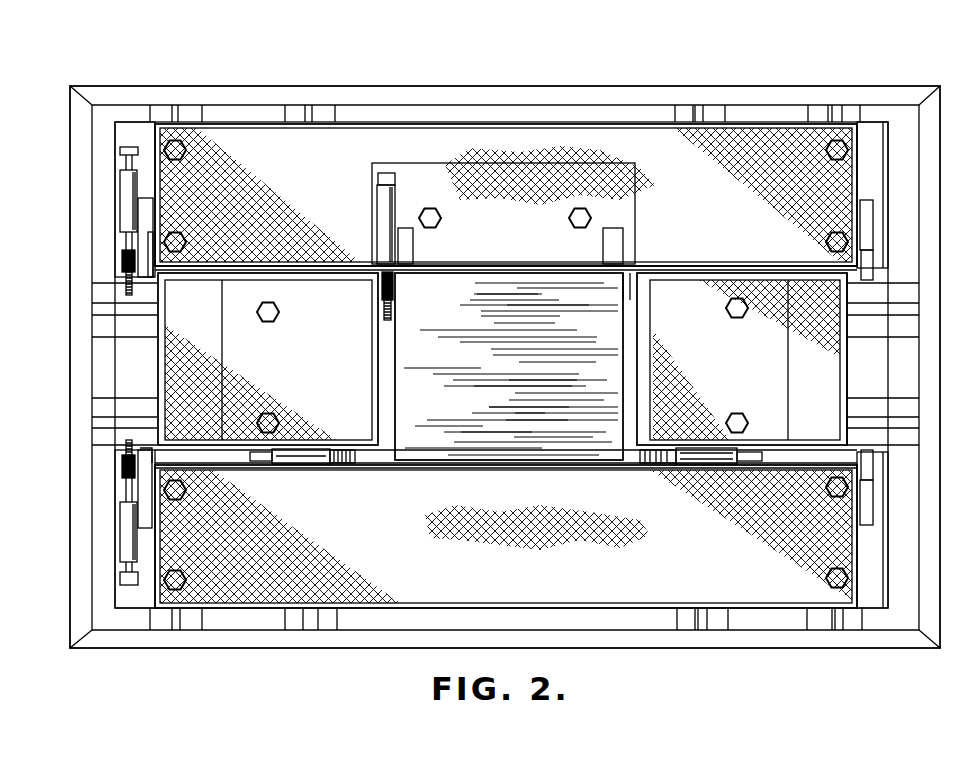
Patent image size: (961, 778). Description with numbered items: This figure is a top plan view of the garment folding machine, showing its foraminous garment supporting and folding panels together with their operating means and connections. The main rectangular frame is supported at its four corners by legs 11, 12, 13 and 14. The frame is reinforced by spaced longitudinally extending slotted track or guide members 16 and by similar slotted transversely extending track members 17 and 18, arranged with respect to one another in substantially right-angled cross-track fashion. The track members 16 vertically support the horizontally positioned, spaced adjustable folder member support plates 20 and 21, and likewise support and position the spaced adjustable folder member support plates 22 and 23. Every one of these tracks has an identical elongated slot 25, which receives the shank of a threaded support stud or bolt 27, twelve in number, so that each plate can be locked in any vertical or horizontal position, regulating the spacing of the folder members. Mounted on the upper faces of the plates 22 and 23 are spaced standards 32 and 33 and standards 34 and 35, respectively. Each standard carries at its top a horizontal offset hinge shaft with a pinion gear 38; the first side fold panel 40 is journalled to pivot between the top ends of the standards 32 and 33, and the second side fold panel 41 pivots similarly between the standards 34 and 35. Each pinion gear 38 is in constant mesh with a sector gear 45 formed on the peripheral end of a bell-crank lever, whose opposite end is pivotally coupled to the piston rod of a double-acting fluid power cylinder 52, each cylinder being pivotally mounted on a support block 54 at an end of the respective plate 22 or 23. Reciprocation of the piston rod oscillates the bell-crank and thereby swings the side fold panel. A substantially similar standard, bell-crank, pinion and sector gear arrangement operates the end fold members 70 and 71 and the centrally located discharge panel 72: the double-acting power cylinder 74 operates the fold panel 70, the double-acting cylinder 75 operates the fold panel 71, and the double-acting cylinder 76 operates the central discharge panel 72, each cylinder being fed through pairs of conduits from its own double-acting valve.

The leg 11 is at (90, 659).
The leg 12 is at (927, 650).
The leg 13 is at (912, 86).
The leg 14 is at (93, 88).
The longitudinally extending slotted track member 16 is at (102, 327).
The transversely extending slotted track member 17 is at (683, 114).
The transversely extending slotted track member 18 is at (188, 115).
The adjustable folder member support plate 20 is at (173, 358).
The adjustable folder member support plate 21 is at (830, 380).
The adjustable folder member support plate 22 is at (886, 176).
The adjustable folder member support plate 23 is at (888, 584).
The elongated slot 25 is at (700, 114).
The threaded support stud 27 is at (186, 490).
The standard 32 is at (145, 270).
The standard 33 is at (874, 270).
The standard 34 is at (155, 457).
The standard 35 is at (874, 462).
The pinion gear 38 is at (122, 262).
The first side fold panel 40 is at (294, 154).
The second side fold panel 41 is at (582, 572).
The sector gear 45 is at (125, 449).
The double-acting fluid power cylinder 52 is at (128, 190).
The support block 54 is at (115, 135).
The end fold member 70 is at (765, 317).
The end fold member 71 is at (235, 392).
The central discharge panel 72 is at (611, 350).
The double-acting power cylinder 74 is at (690, 462).
The double-acting cylinder 75 is at (312, 465).
The double-acting cylinder 76 is at (388, 216).